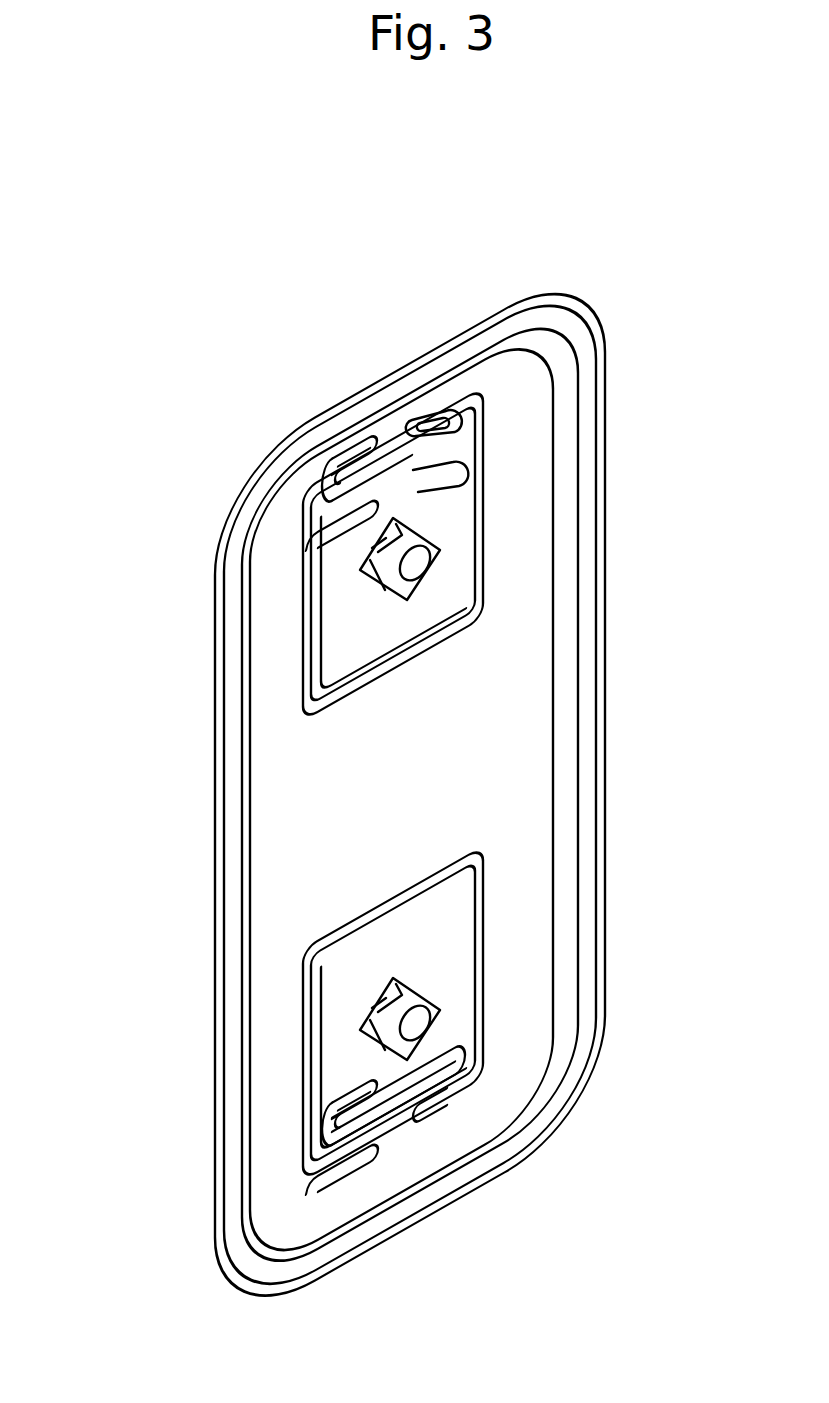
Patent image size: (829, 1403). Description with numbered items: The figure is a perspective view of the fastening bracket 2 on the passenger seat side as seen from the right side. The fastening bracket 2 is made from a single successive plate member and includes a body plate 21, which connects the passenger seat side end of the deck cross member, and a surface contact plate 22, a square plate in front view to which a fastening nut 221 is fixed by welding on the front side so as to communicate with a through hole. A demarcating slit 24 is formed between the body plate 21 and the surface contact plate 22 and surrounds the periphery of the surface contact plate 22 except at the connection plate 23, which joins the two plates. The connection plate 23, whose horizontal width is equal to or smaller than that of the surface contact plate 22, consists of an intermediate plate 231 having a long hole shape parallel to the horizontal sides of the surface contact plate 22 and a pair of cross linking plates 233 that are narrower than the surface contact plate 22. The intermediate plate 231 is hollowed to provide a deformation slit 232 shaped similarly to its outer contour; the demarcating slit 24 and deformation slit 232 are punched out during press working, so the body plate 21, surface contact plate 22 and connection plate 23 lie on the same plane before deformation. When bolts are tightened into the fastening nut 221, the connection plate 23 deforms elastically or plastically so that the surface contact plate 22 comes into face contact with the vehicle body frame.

The fastening bracket 2 is at (222, 857).
The body plate 21 is at (548, 712).
The surface contact plate 22 is at (385, 635).
The fastening nut 221 is at (432, 585).
The connection plate 23 is at (269, 825).
The intermediate plate 231 is at (340, 478).
The deformation slit 232 is at (345, 490).
The cross linking plate 233 is at (360, 444).
The demarcating slit 24 is at (320, 698).